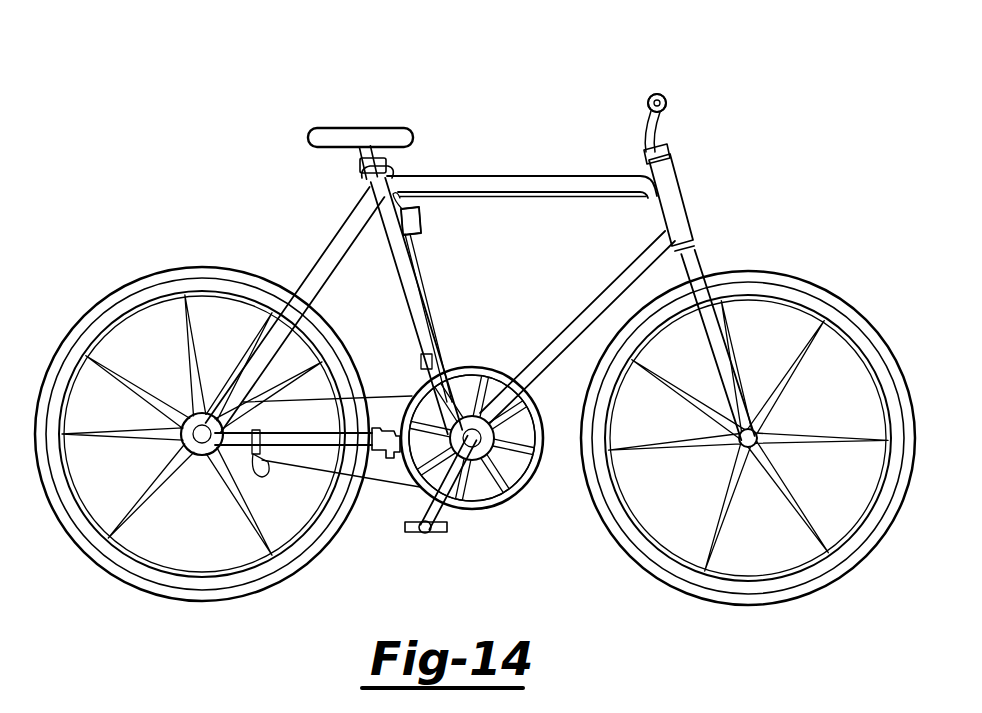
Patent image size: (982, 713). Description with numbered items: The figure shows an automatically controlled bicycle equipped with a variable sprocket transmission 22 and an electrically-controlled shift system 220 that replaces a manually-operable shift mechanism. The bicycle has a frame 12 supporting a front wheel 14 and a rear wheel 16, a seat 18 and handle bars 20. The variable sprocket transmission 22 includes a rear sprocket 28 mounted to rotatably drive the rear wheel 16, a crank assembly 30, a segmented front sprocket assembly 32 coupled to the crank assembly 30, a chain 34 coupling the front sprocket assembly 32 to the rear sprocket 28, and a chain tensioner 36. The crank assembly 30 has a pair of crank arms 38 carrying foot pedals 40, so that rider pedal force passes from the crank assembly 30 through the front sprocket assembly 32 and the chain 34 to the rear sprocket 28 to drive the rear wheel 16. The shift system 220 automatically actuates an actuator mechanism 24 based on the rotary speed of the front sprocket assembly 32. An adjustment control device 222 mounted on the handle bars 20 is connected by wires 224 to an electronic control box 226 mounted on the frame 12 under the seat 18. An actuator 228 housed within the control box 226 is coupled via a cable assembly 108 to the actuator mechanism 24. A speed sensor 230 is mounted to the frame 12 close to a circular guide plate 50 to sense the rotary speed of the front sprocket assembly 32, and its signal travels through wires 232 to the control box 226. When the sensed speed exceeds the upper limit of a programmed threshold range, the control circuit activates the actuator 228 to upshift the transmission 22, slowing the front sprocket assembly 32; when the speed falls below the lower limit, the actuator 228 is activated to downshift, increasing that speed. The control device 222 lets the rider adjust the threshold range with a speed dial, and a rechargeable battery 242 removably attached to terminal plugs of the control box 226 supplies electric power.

The frame 12 is at (557, 187).
The front wheel 14 is at (808, 282).
The rear wheel 16 is at (217, 268).
The seat 18 is at (390, 130).
The handle bars 20 is at (697, 125).
The variable sprocket transmission 22 is at (531, 345).
The actuator mechanism 24 is at (385, 462).
The rear sprocket 28 is at (205, 456).
The crank assembly 30 is at (500, 470).
The segmented front sprocket assembly 32 is at (489, 372).
The chain 34 is at (365, 400).
The chain tensioner 36 is at (262, 478).
The crank arms 38 is at (455, 505).
The foot pedals 40 is at (410, 532).
The circular guide plate 50 is at (513, 423).
The cable assembly 108 is at (418, 289).
The electrically-controlled shift system 220 is at (563, 232).
The adjustment control device 222 is at (666, 98).
The wires 224 is at (615, 197).
The electronic control box 226 is at (420, 240).
The actuator 228 is at (400, 228).
The speed sensor 230 is at (421, 357).
The wires 232 is at (404, 298).
The rechargeable battery 242 is at (520, 156).